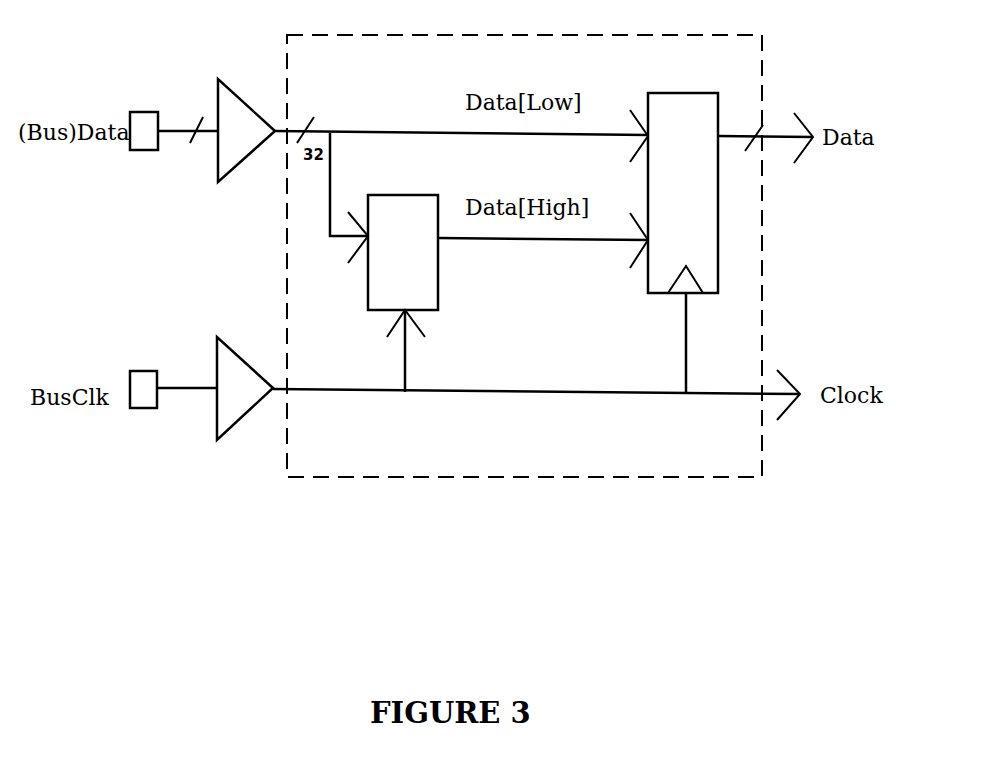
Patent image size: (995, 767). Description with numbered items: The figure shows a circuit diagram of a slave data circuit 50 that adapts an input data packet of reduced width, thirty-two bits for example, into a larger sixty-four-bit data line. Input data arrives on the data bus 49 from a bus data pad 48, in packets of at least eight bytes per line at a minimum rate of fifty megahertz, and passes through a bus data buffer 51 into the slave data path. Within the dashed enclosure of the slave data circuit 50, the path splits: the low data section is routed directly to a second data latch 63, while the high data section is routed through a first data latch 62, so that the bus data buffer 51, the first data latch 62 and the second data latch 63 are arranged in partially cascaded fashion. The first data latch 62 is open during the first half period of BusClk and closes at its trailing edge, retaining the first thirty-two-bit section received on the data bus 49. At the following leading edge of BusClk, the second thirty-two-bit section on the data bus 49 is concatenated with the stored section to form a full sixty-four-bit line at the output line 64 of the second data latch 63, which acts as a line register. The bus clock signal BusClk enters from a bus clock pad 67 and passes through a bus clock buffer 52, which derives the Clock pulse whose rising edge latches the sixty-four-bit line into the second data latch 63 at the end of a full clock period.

The bus data pad 48 is at (145, 112).
The data bus 49 is at (173, 131).
The bus data buffer 51 is at (250, 108).
The slave data circuit 50 is at (703, 477).
The first data latch 62 is at (438, 290).
The second data latch 63 is at (645, 270).
The output line 64 is at (776, 137).
The bus clock pad 67 is at (145, 408).
The bus clock buffer 52 is at (253, 365).